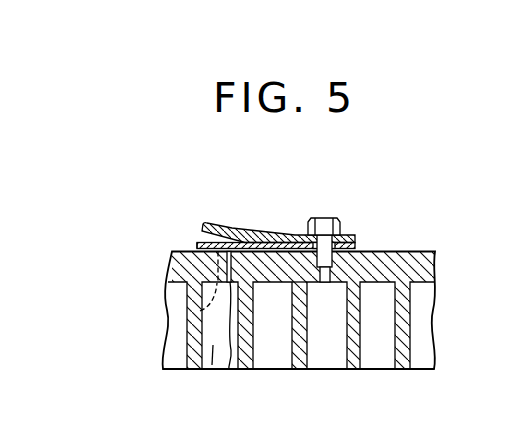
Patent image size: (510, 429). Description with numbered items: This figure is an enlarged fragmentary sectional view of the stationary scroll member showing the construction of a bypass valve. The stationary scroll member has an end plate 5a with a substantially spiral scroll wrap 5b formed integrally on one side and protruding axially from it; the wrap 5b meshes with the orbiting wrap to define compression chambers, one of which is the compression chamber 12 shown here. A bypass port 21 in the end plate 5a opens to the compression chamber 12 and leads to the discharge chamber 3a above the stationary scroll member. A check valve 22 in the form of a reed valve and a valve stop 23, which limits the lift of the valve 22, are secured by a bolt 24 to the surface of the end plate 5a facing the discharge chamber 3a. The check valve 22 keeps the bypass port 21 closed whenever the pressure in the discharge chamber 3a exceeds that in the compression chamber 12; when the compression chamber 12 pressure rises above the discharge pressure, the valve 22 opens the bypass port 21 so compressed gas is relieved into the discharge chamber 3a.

The end plate 5a is at (412, 252).
The scroll wrap 5b is at (298, 350).
The discharge chamber 3a is at (306, 197).
The compression chamber 12 is at (212, 365).
The bypass port 21 is at (200, 311).
The check valve 22 is at (200, 246).
The valve stop 23 is at (232, 227).
The bolt 24 is at (340, 231).